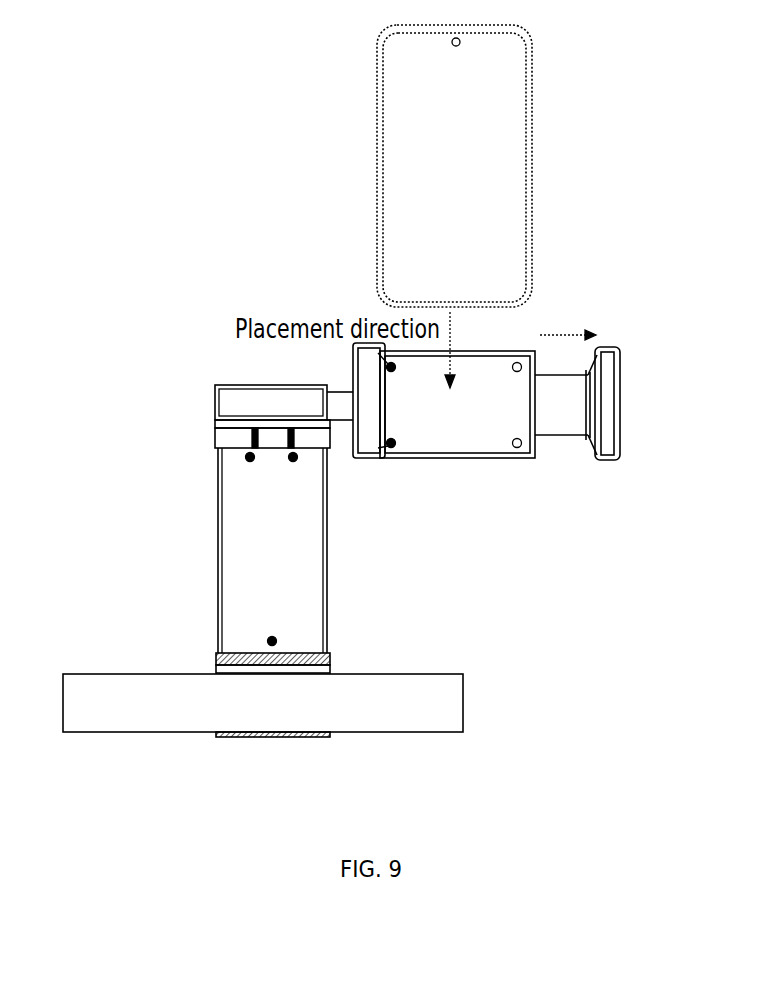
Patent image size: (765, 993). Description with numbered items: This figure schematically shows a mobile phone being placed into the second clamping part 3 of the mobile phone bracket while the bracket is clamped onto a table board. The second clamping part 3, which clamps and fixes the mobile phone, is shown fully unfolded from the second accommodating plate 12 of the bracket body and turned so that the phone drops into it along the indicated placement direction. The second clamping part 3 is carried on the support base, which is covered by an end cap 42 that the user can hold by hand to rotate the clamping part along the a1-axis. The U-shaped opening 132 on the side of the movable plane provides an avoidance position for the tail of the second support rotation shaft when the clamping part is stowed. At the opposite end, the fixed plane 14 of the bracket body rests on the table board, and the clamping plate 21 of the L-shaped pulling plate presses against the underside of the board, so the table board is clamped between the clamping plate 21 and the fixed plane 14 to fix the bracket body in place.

The second clamping part 3 is at (488, 445).
The end cap 42 is at (253, 395).
The U-shaped opening 132 is at (265, 438).
The second accommodating plate 12 is at (242, 553).
The fixed plane 14 is at (217, 665).
The clamping plate 21 is at (260, 738).